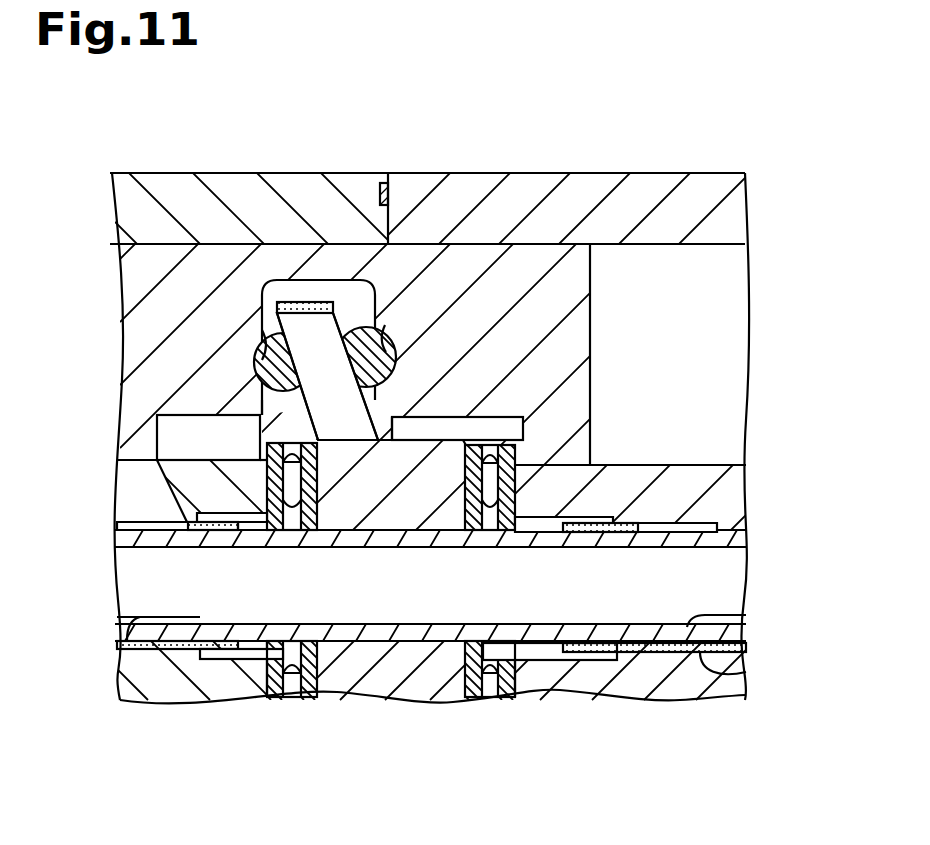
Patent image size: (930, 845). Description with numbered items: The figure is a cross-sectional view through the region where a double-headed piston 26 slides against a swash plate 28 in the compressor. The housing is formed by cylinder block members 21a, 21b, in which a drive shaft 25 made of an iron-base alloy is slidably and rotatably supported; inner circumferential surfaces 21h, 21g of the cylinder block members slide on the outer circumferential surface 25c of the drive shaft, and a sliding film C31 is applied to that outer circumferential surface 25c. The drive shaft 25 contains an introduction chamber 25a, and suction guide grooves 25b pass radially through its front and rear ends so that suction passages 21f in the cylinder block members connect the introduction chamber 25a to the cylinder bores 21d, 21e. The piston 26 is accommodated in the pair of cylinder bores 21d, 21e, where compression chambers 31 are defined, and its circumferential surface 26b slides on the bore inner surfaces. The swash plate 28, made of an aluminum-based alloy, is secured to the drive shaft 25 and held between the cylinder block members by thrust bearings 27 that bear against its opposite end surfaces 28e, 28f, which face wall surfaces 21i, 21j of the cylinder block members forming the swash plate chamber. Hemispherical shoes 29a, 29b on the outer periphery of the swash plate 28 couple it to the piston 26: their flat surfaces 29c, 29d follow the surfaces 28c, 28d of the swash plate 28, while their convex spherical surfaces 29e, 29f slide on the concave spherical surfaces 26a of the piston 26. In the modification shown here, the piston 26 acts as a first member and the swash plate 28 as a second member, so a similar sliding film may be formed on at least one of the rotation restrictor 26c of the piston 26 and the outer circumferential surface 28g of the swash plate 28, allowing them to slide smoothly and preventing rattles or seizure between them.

The cylinder block member 21a is at (523, 188).
The cylinder block member 21b is at (257, 182).
The cylinder bore 21d is at (155, 247).
The cylinder bore 21e is at (602, 250).
The suction passage 21f is at (163, 483).
The inner circumferential surface 21g is at (745, 622).
The inner circumferential surface 21h is at (112, 617).
The wall surface 21i is at (513, 697).
The wall surface 21j is at (277, 697).
The drive shaft 25 is at (772, 638).
The introduction chamber 25a is at (421, 600).
The suction guide groove 25b is at (184, 636).
The outer circumferential surface 25c is at (740, 675).
The double-headed piston 26 is at (437, 280).
The concave spherical surface 26a is at (262, 362).
The circumferential surface 26b is at (590, 470).
The rotation restrictor 26c is at (340, 285).
The thrust bearing 27 is at (287, 443).
The swash plate 28 is at (397, 683).
The surface of swash plate 28c is at (265, 405).
The surface of swash plate 28d is at (374, 412).
The end surface of swash plate 28e is at (470, 700).
The end surface of swash plate 28f is at (317, 697).
The outer circumferential surface 28g is at (283, 303).
The hemispherical shoe 29a is at (277, 307).
The hemispherical shoe 29b is at (335, 302).
The flat surface 29c is at (270, 293).
The flat surface 29d is at (365, 440).
The convex spherical surface 29e is at (260, 335).
The convex spherical surface 29f is at (386, 340).
The compression chamber 31 is at (696, 275).
The sliding film C31 is at (298, 300).